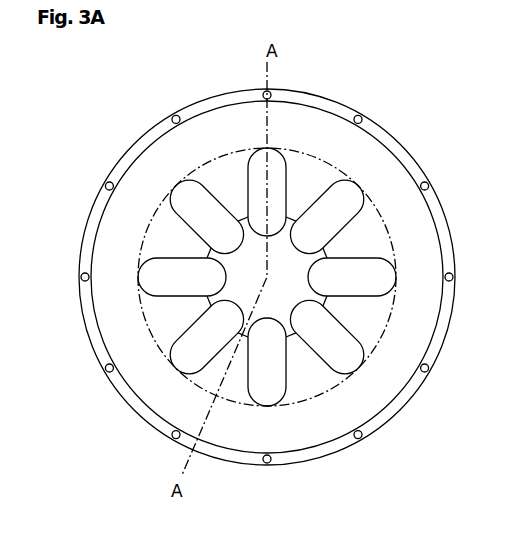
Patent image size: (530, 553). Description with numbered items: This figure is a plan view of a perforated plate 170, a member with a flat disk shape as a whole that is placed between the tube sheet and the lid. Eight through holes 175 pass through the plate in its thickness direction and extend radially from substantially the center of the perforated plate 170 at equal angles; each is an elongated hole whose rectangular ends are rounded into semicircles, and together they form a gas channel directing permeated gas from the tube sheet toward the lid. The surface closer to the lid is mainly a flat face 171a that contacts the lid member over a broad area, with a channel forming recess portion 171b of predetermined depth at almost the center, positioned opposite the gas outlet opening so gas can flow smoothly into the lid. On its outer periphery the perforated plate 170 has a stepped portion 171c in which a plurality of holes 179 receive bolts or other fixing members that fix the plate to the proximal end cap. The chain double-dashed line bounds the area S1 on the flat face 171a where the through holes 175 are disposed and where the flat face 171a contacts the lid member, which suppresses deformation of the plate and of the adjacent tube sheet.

The perforated plate 170 is at (269, 255).
The flat face 171a is at (393, 333).
The channel forming recess portion 171b is at (308, 263).
The stepped portion 171c is at (392, 143).
The through hole 175 is at (257, 170).
The hole 179 is at (178, 116).
The area S1 is at (150, 308).